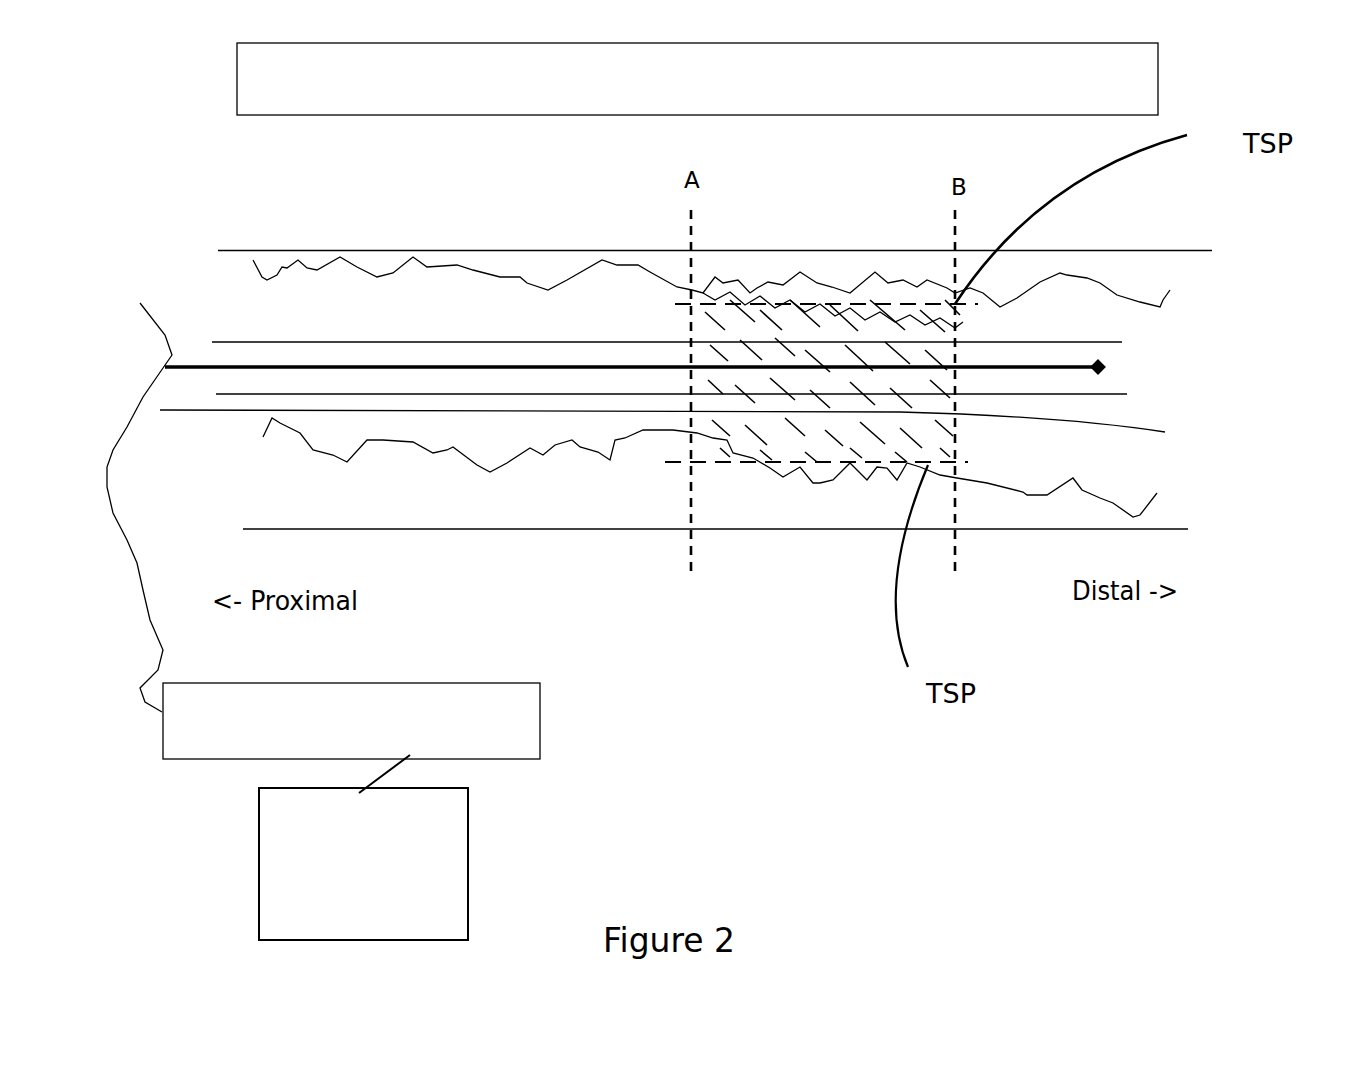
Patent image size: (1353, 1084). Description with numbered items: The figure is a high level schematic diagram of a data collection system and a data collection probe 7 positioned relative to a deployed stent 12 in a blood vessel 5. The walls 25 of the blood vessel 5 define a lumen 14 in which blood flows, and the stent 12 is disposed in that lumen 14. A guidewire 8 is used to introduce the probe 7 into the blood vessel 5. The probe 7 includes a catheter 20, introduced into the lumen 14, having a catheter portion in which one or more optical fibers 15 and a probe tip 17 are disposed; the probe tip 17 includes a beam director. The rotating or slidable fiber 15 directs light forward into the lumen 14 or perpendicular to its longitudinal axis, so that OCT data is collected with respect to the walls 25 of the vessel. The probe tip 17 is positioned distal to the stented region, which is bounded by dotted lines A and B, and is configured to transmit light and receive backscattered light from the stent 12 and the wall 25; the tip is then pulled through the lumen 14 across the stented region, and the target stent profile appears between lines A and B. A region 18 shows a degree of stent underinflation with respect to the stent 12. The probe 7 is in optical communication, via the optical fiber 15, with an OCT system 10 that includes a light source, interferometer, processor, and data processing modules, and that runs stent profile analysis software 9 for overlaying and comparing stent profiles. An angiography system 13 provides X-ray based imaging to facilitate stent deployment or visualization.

The blood vessel 5 is at (467, 220).
The data collection probe 7 is at (230, 325).
The guidewire 8 is at (583, 411).
The stent profile analysis software 9 is at (259, 845).
The OCT system 10 is at (497, 695).
The stent 12 is at (833, 318).
The angiography system 13 is at (237, 59).
The lumen 14 is at (356, 320).
The optical fiber 15 is at (500, 547).
The probe tip 17 is at (1090, 379).
The region of stent underinflation 18 is at (918, 288).
The catheter 20 is at (243, 393).
The vessel walls 25 is at (748, 268).